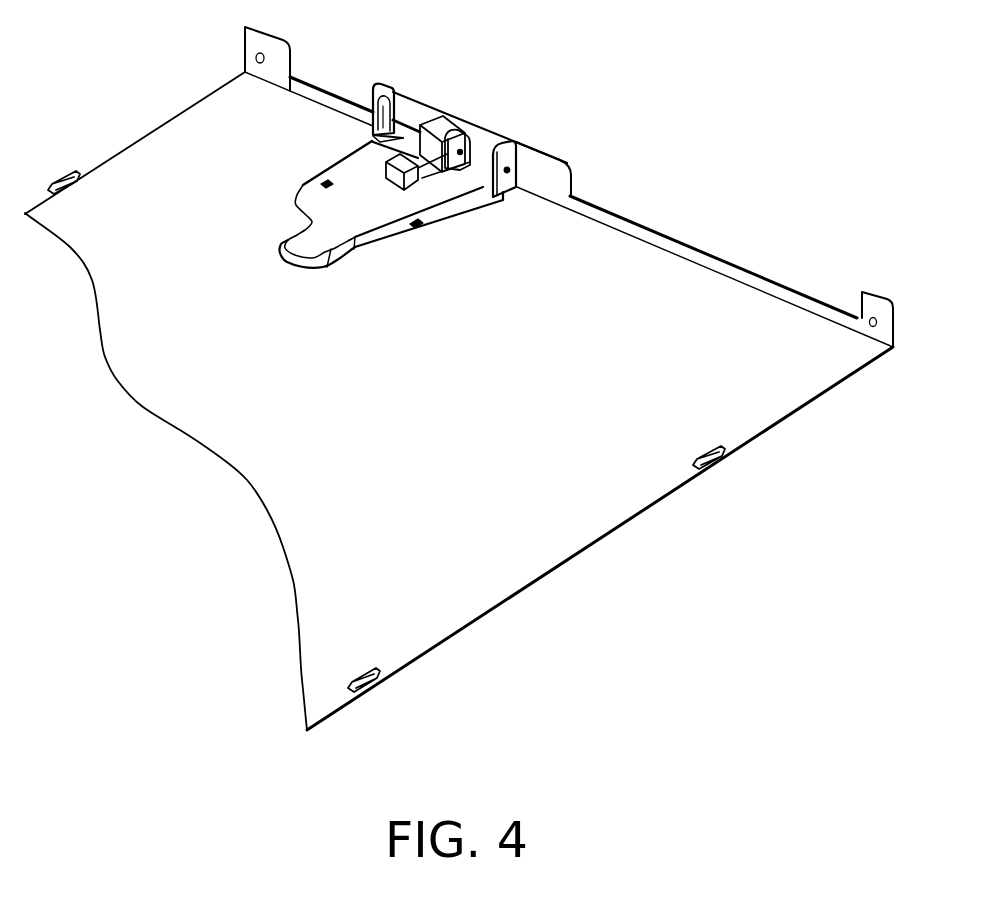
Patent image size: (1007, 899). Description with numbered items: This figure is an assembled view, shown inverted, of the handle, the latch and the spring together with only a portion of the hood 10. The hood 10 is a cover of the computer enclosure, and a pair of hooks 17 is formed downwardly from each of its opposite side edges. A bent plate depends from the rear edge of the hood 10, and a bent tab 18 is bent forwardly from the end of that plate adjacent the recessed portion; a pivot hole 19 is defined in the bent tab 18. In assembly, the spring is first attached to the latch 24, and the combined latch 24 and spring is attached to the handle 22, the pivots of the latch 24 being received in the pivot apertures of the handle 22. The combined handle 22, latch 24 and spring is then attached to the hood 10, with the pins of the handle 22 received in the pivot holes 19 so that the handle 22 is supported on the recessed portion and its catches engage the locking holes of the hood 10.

The hood 10 is at (488, 545).
The hooks 17 is at (718, 466).
The bent tab 18 is at (506, 160).
The pivot hole 19 is at (517, 182).
The handle 22 is at (388, 117).
The latch 24 is at (443, 120).